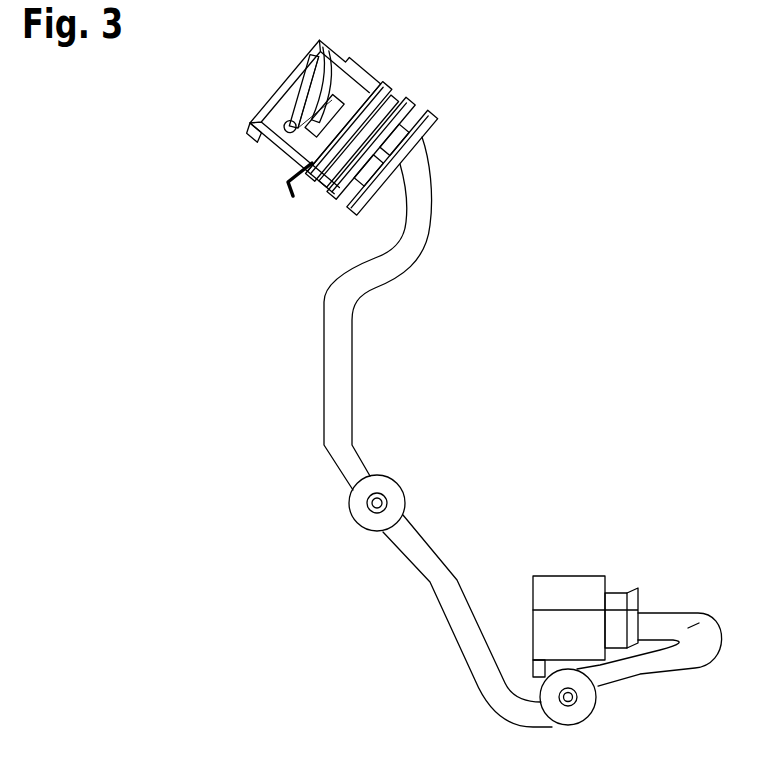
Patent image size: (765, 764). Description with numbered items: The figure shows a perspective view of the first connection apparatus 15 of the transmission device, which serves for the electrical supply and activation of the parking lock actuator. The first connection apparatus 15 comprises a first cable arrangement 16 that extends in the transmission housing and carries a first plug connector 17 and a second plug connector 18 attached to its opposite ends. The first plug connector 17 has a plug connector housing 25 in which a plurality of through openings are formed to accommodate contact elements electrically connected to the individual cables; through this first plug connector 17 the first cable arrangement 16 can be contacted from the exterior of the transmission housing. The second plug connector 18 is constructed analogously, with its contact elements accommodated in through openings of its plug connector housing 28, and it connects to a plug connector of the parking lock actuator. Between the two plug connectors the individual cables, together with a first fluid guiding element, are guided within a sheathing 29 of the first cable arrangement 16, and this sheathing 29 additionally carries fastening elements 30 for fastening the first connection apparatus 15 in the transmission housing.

The first connection apparatus 15 is at (542, 195).
The first cable arrangement 16 is at (457, 432).
The first plug connector 17 is at (335, 126).
The second plug connector 18 is at (585, 566).
The plug connector housing 25 is at (278, 141).
The plug connector housing 28 is at (543, 577).
The sheathing 29 is at (345, 338).
The fastening elements 30 is at (360, 508).